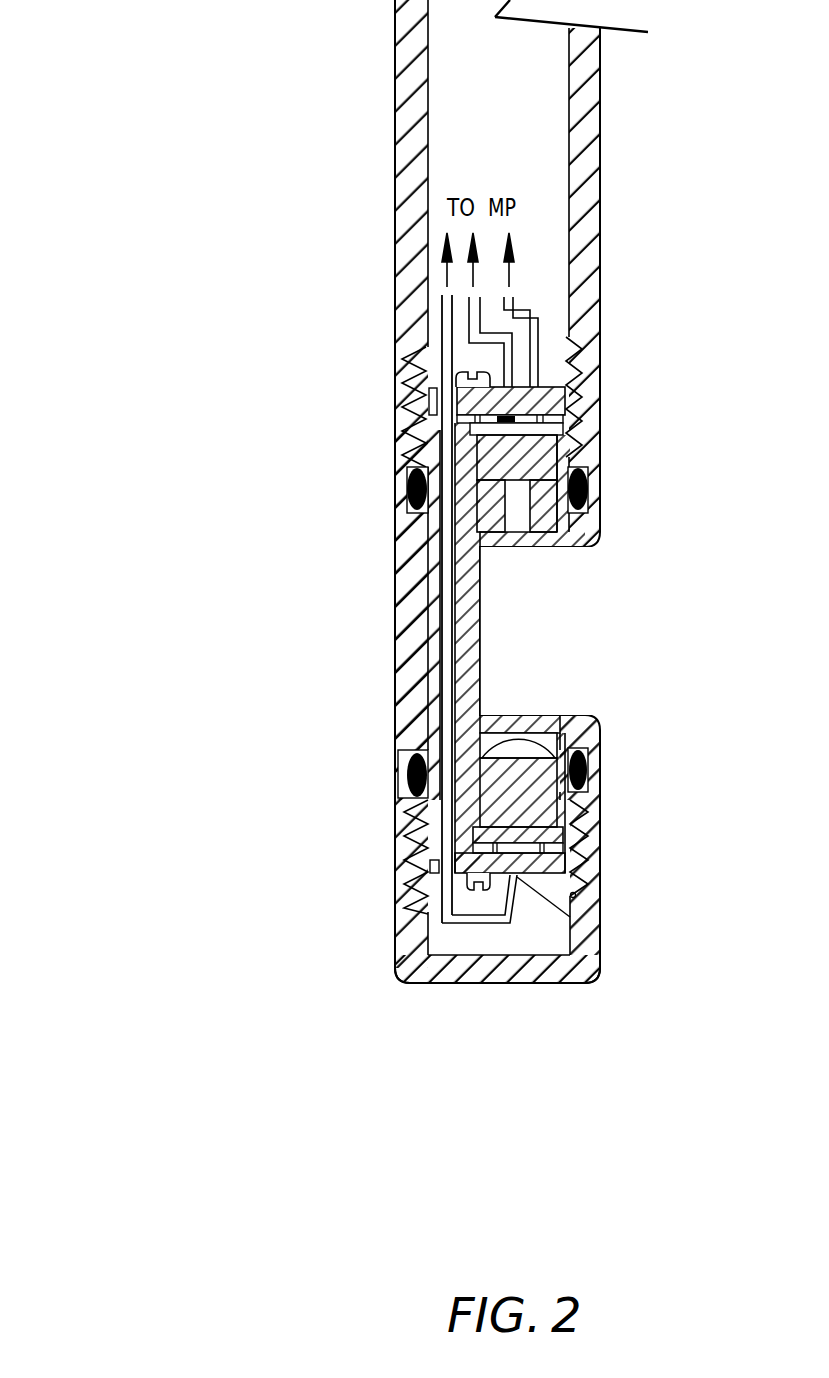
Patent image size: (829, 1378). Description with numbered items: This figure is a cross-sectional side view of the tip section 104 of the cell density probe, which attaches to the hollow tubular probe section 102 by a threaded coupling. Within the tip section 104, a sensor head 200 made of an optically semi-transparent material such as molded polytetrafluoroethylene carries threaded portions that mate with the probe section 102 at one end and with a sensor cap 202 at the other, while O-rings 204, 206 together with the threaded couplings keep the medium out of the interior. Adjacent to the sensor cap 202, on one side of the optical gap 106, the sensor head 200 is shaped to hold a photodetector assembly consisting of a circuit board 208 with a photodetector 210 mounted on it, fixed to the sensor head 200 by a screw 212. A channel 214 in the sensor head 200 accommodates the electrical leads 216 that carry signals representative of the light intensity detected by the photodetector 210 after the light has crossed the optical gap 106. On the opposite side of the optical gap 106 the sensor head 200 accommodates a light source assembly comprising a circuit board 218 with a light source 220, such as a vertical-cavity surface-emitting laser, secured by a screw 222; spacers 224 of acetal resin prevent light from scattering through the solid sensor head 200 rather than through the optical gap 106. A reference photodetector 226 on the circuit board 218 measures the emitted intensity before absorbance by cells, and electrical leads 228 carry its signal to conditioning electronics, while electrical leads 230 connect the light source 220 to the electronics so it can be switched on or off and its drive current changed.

The probe section 102 is at (396, 183).
The tip section 104 is at (172, 357).
The optical gap 106 is at (613, 549).
The sensor head 200 is at (396, 677).
The sensor cap 202 is at (595, 981).
The O-ring 204 is at (408, 770).
The O-ring 206 is at (590, 485).
The circuit board 208 is at (573, 895).
The photodetector 210 is at (560, 803).
The screw 212 is at (443, 918).
The channel 214 is at (452, 595).
The electrical leads 216 is at (442, 565).
The circuit board 218 is at (566, 389).
The light source 220 is at (565, 432).
The screw 222 is at (488, 372).
The spacers 224 is at (560, 520).
The reference photodetector 226 is at (567, 418).
The electrical leads 228 is at (478, 322).
The electrical leads 230 is at (530, 322).